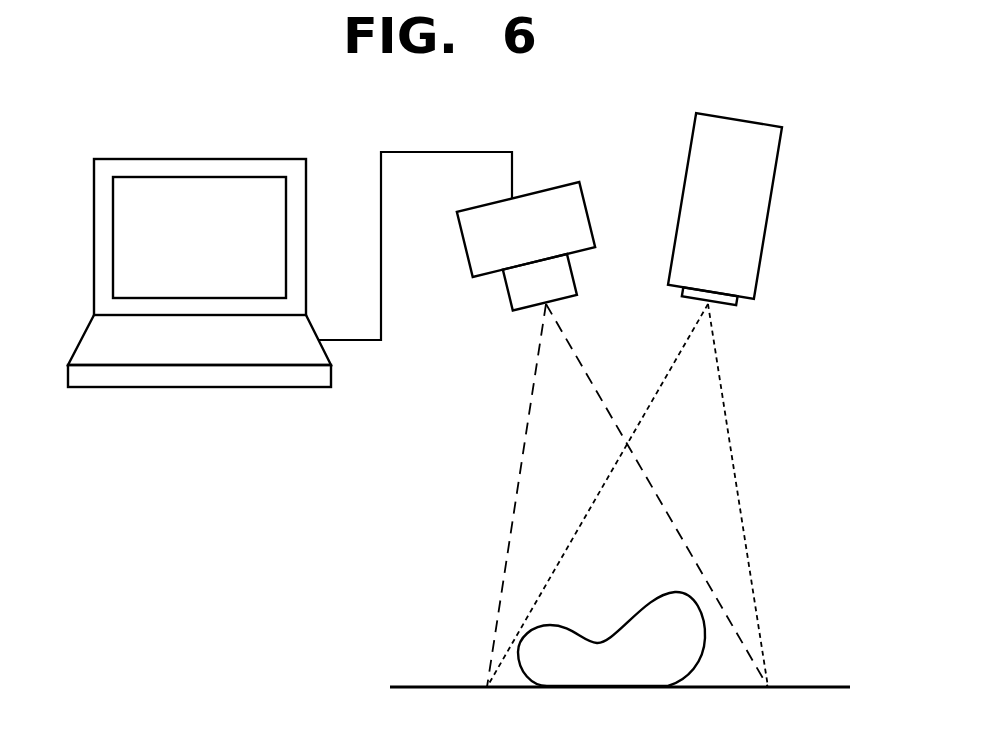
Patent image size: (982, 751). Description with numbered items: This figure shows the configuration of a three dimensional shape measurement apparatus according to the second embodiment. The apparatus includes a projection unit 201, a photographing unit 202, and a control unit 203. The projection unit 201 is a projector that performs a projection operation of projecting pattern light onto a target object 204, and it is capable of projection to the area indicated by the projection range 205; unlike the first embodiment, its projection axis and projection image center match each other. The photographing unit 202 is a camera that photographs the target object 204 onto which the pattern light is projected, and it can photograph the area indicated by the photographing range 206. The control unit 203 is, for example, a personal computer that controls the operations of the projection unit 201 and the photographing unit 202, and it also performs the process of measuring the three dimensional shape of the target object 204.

The projection unit 201 is at (777, 188).
The photographing unit 202 is at (559, 182).
The control unit 203 is at (267, 159).
The target object 204 is at (516, 653).
The projection range 205 is at (717, 410).
The photographing range 206 is at (537, 438).